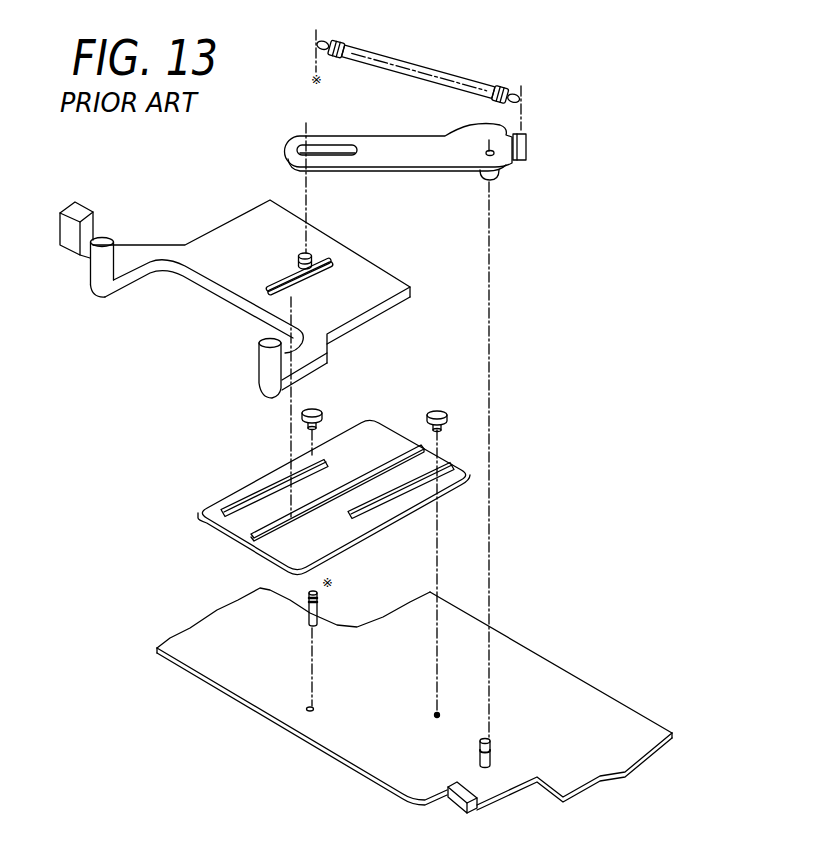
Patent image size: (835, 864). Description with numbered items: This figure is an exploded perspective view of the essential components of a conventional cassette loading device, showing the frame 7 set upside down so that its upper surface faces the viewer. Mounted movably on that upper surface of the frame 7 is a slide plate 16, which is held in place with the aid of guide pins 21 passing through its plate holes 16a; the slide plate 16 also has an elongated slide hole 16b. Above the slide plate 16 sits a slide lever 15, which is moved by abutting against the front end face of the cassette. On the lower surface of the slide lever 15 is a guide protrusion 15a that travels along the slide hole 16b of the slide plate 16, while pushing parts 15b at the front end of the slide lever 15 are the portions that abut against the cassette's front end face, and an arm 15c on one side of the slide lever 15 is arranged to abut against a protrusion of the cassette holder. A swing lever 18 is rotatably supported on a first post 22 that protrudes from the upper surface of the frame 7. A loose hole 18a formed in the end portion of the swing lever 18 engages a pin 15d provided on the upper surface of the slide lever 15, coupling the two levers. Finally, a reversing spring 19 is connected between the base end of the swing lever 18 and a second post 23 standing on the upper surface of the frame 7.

The frame 7 is at (340, 742).
The slide lever 15 is at (219, 294).
The guide protrusion 15a is at (258, 297).
The pushing parts 15b is at (102, 288).
The arm 15c is at (72, 247).
The pin 15d is at (310, 256).
The slide plate 16 is at (349, 499).
The plate holes 16a is at (250, 497).
The slide hole 16b is at (246, 536).
The swing lever 18 is at (390, 150).
The loose hole 18a is at (331, 152).
The reversing spring 19 is at (455, 68).
The guide pins 21 is at (326, 412).
The first post 22 is at (492, 747).
The second post 23 is at (320, 606).